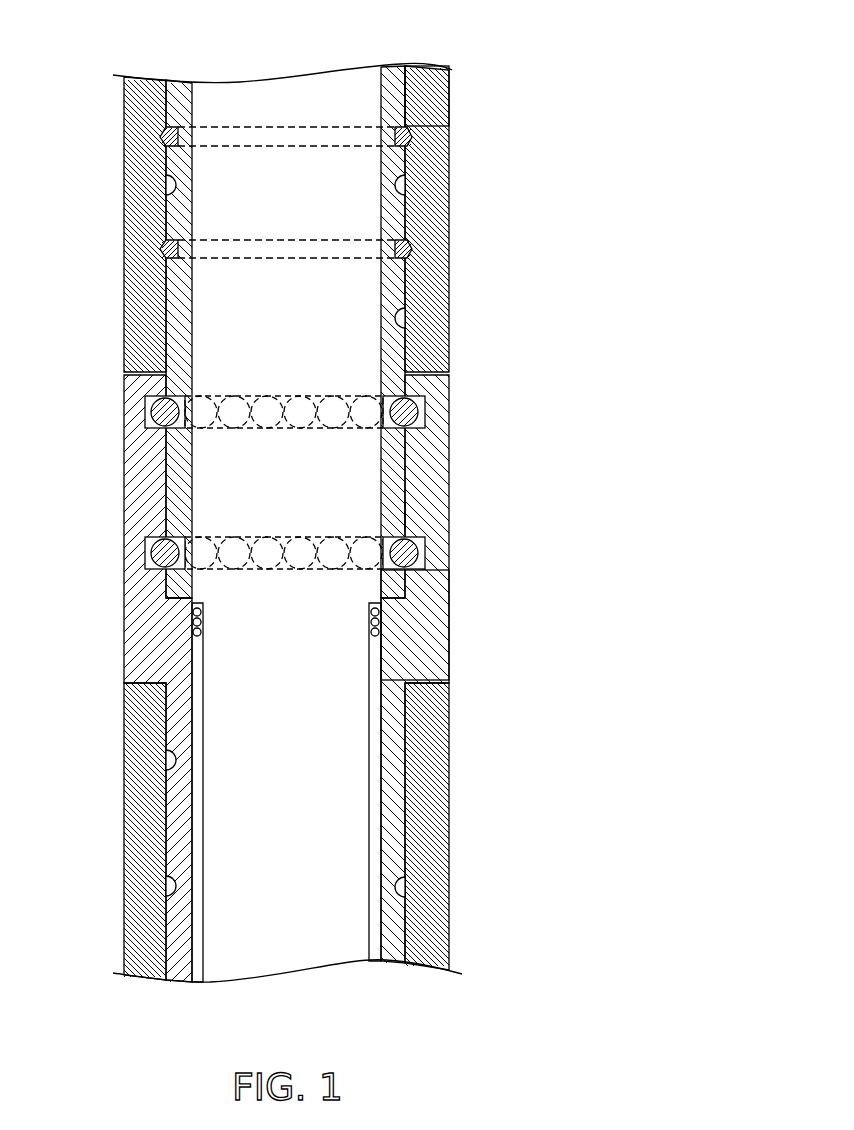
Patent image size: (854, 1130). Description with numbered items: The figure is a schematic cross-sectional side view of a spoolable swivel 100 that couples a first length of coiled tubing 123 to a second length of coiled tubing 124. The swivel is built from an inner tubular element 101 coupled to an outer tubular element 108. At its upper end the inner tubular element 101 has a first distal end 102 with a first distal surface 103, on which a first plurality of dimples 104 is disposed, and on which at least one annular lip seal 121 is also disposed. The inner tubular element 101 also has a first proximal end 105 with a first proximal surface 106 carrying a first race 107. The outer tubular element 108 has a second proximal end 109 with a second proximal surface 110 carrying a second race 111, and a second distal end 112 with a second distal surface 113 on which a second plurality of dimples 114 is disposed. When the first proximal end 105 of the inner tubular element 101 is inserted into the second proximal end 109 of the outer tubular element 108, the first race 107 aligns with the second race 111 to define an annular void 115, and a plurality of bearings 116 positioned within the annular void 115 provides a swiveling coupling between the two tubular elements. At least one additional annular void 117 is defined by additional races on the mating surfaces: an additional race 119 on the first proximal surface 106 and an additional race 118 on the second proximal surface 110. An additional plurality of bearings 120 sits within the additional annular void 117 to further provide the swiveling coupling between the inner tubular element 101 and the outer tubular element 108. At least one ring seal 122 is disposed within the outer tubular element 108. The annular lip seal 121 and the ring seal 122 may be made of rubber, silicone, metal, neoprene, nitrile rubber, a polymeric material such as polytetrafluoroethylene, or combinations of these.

The spoolable swivel 100 is at (450, 38).
The inner tubular element 101 is at (400, 102).
The first distal end 102 is at (232, 92).
The first distal surface 103 is at (415, 112).
The first plurality of dimples 104 is at (407, 184).
The first proximal end 105 is at (325, 578).
The first proximal surface 106 is at (405, 526).
The first race 107 is at (425, 406).
The outer tubular element 108 is at (400, 950).
The second proximal end 109 is at (248, 388).
The second proximal surface 110 is at (160, 466).
The second race 111 is at (146, 413).
The second distal end 112 is at (355, 975).
The second distal surface 113 is at (165, 972).
The second plurality of dimples 114 is at (168, 760).
The annular void 115 is at (300, 397).
The plurality of bearings 116 is at (408, 413).
The additional annular void 117 is at (277, 570).
The additional race 118 is at (146, 554).
The additional race 119 is at (168, 578).
The additional plurality of bearings 120 is at (425, 553).
The annular lip seal 121 is at (165, 135).
The ring seal 122 is at (194, 627).
The first length of coiled tubing 123 is at (162, 178).
The second length of coiled tubing 124 is at (425, 912).